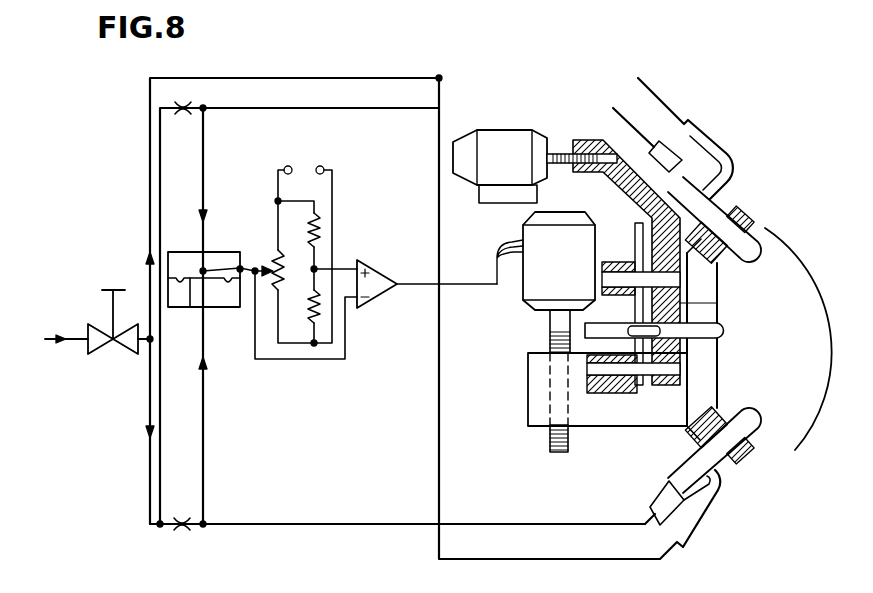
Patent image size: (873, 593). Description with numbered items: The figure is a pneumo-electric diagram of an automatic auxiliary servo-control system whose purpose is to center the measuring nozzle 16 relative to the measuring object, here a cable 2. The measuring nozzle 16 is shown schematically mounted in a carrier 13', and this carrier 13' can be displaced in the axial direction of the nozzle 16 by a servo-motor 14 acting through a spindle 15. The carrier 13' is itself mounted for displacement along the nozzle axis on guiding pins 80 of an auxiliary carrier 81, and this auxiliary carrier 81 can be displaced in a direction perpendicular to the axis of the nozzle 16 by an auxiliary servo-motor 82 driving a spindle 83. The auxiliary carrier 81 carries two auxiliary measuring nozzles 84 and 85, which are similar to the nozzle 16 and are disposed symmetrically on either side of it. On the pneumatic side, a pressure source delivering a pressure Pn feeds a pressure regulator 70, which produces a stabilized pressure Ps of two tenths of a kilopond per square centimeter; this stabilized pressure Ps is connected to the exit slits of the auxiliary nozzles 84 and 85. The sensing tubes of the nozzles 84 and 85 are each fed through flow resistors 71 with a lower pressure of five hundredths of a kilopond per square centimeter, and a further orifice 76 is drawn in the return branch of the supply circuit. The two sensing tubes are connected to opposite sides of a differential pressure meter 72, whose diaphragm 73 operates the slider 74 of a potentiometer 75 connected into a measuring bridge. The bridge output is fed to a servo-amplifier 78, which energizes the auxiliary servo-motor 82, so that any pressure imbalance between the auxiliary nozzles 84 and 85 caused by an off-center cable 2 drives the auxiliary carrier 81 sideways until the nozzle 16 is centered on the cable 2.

The cable 2 is at (775, 230).
The carrier 13' is at (732, 306).
The servo-motor 14 is at (463, 158).
The spindle 15 is at (556, 150).
The measuring nozzle 16 is at (707, 331).
The pressure regulator 70 is at (107, 341).
The flow resistors 71 is at (176, 111).
The differential pressure meter 72 is at (172, 252).
The diaphragm 73 is at (192, 300).
The slider 74 is at (248, 268).
The potentiometer 75 is at (283, 262).
The orifice 76 is at (181, 532).
The amplifier 78 is at (376, 286).
The guiding pins 80 is at (668, 277).
The auxiliary carrier 81 is at (617, 415).
The auxiliary servo-motor 82 is at (538, 280).
The spindle 83 is at (550, 446).
The auxiliary measuring nozzle 84 is at (730, 190).
The auxiliary measuring nozzle 85 is at (712, 452).
The stabilized pressure Ps is at (378, 77).
The source pressure Pn is at (72, 337).